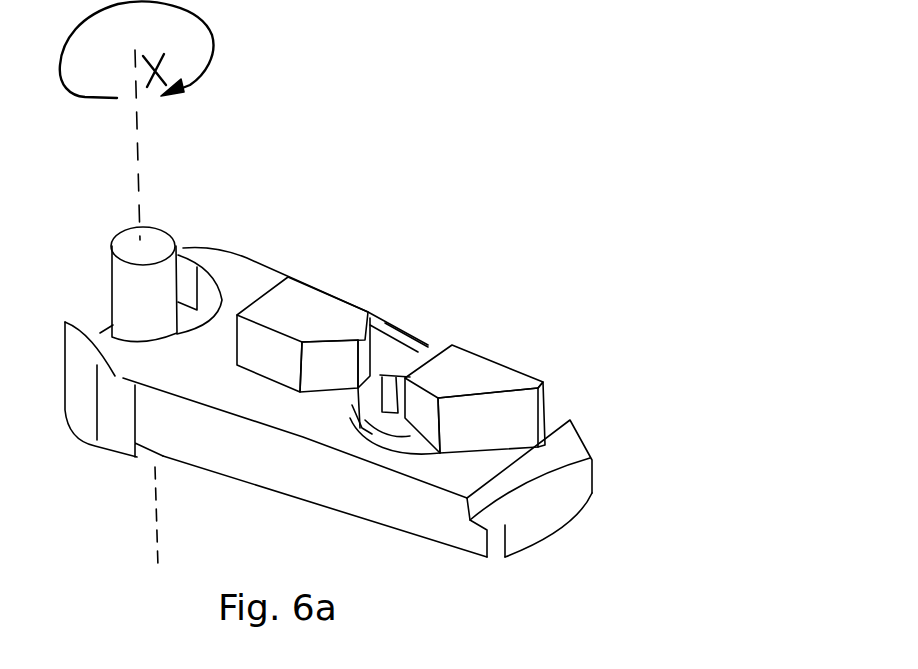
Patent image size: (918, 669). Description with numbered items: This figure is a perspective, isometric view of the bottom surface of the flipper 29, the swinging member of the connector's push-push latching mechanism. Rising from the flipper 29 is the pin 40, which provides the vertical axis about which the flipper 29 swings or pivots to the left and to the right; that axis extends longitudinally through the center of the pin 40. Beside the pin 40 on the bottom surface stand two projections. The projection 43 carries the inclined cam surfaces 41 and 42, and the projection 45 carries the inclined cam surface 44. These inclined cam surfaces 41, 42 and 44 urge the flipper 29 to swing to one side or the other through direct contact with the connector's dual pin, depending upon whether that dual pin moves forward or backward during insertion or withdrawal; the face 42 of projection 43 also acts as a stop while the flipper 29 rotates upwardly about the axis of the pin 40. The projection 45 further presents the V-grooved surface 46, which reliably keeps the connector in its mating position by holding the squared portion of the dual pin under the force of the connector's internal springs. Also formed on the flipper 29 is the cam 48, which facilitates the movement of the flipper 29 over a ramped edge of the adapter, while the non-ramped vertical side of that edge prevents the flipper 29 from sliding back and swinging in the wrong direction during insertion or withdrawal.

The flipper 29 is at (163, 468).
The pin 40 is at (148, 243).
The inclined cam surface 41 is at (367, 330).
The inclined cam surface 42 is at (329, 366).
The projection 43 is at (313, 308).
The inclined cam surface 44 is at (488, 420).
The projection 45 is at (488, 375).
The V-grooved surface 46 is at (433, 345).
The cam 48 is at (365, 387).